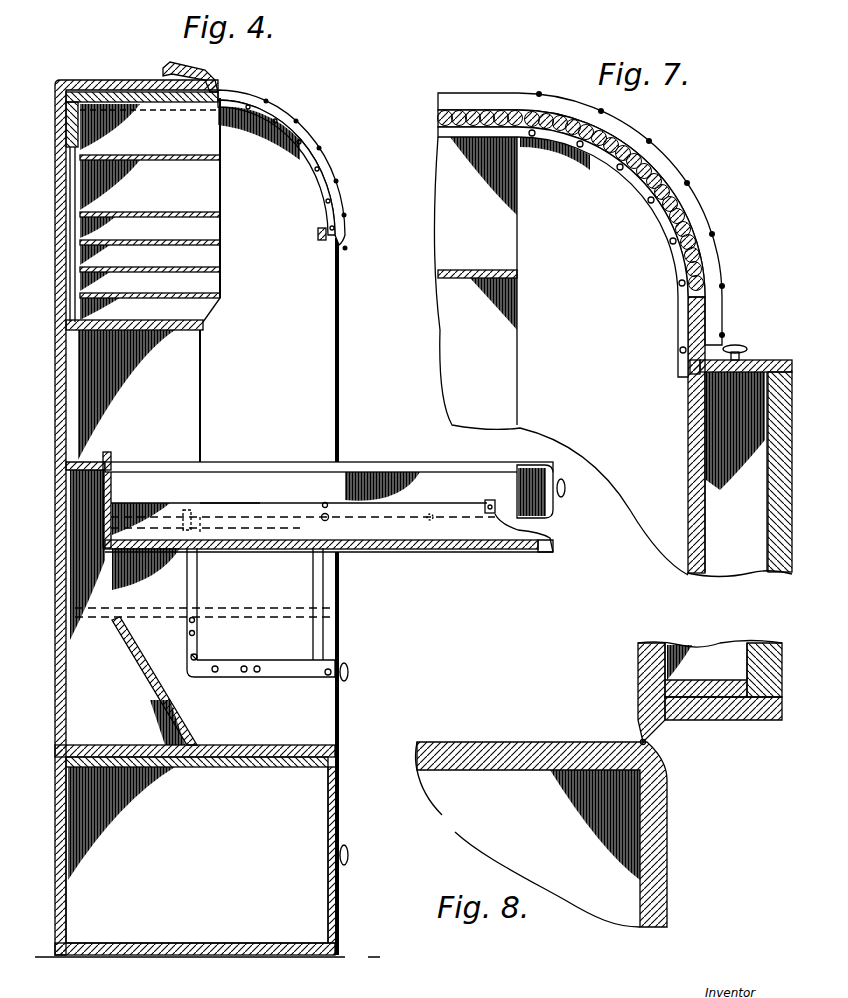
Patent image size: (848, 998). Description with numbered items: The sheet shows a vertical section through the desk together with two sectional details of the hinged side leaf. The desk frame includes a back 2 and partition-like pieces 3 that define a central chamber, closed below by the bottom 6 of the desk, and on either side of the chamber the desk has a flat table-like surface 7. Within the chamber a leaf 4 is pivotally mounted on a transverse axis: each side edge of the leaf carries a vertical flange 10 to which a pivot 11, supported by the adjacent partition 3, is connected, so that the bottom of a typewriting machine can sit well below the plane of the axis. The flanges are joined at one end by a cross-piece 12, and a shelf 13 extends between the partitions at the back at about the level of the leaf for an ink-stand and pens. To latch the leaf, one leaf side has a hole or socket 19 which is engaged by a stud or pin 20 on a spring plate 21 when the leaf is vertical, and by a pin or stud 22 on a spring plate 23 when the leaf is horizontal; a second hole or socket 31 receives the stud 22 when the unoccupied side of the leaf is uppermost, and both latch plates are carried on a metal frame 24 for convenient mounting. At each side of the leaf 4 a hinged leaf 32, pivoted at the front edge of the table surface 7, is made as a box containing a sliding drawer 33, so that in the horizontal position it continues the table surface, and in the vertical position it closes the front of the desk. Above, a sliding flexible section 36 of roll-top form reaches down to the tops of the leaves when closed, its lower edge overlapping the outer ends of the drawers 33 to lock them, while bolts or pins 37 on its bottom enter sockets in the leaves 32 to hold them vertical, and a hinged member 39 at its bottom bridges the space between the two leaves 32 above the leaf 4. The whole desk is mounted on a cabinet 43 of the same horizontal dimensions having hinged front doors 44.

In FIG. 4, the back 2 is at (57, 425).
In FIG. 4, the partition-like pieces 3 is at (195, 392).
In FIG. 4, the leaf 4 is at (420, 545).
In FIG. 4, the bottom 6 is at (292, 745).
In FIG. 8, the table-like surface 7 is at (548, 748).
In FIG. 4, the vertical flange 10 is at (470, 530).
In FIG. 4, the pivot 11 is at (328, 514).
In FIG. 4, the cross-piece 12 is at (288, 506).
In FIG. 4, the shelf 13 is at (90, 458).
In FIG. 4, the hole or socket 19 is at (210, 500).
In FIG. 4, the stud or pin 20 is at (346, 668).
In FIG. 4, the spring plate 21 is at (293, 672).
In FIG. 4, the pin or stud 22 is at (186, 510).
In FIG. 4, the spring plate 23 is at (187, 594).
In FIG. 4, the metal frame 24 is at (203, 675).
In FIG. 4, the second hole or socket 31 is at (436, 500).
In FIG. 4, the hinged leaf 32 is at (490, 470).
In FIG. 7, the hinged leaf 32 is at (688, 420).
In FIG. 8, the hinged leaf 32 is at (710, 696).
In FIG. 7, the sliding drawer 33 is at (705, 510).
In FIG. 8, the sliding drawer 33 is at (710, 655).
In FIG. 4, the sliding flexible section 36 is at (140, 92).
In FIG. 7, the sliding flexible section 36 is at (700, 264).
In FIG. 7, the bolts or pins 37 is at (690, 370).
In FIG. 4, the hinged member 39 is at (208, 72).
In FIG. 4, the cabinet 43 is at (197, 855).
In FIG. 4, the hinged front doors 44 is at (340, 822).